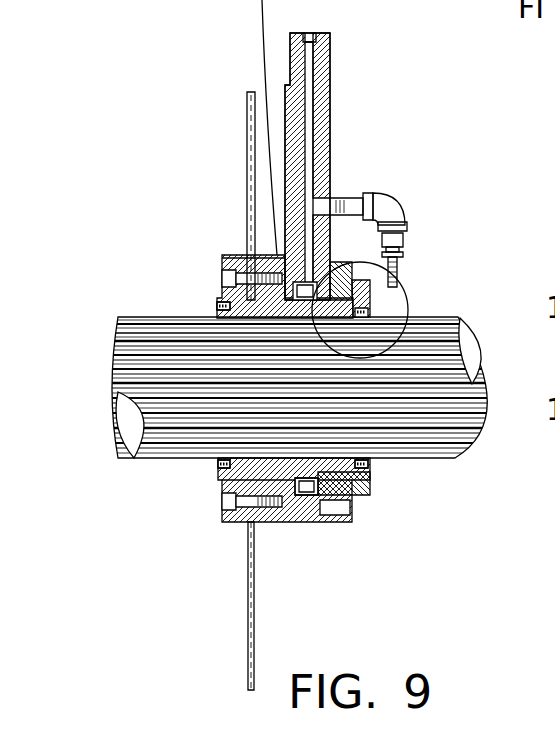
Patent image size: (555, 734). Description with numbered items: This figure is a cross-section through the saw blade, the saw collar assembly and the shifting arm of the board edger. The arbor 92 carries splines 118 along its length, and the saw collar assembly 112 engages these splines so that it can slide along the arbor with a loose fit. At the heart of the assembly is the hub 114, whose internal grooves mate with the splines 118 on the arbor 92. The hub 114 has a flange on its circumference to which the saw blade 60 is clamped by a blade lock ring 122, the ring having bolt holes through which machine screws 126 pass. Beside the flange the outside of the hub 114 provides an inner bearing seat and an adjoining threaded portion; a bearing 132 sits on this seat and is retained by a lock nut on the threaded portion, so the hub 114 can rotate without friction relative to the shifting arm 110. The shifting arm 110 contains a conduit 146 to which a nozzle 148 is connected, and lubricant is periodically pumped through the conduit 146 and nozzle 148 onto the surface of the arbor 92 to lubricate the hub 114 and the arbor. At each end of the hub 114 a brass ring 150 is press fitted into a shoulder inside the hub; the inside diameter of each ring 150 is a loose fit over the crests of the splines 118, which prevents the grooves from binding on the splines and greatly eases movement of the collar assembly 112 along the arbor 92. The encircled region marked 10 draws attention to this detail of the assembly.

The roll assembly detail 10 is at (432, 302).
The saw blade 60 is at (247, 112).
The arbor 92 is at (447, 462).
The shifting arm 110 is at (330, 72).
The saw collar assembly 112 is at (160, 130).
The hub 114 is at (215, 282).
The splines 118 is at (162, 430).
The blade lock ring 122 is at (250, 262).
The machine screws 126 is at (225, 275).
The bearing 132 is at (308, 488).
The conduit 146 is at (318, 128).
The nozzle 148 is at (400, 205).
The brass ring 150 is at (218, 306).